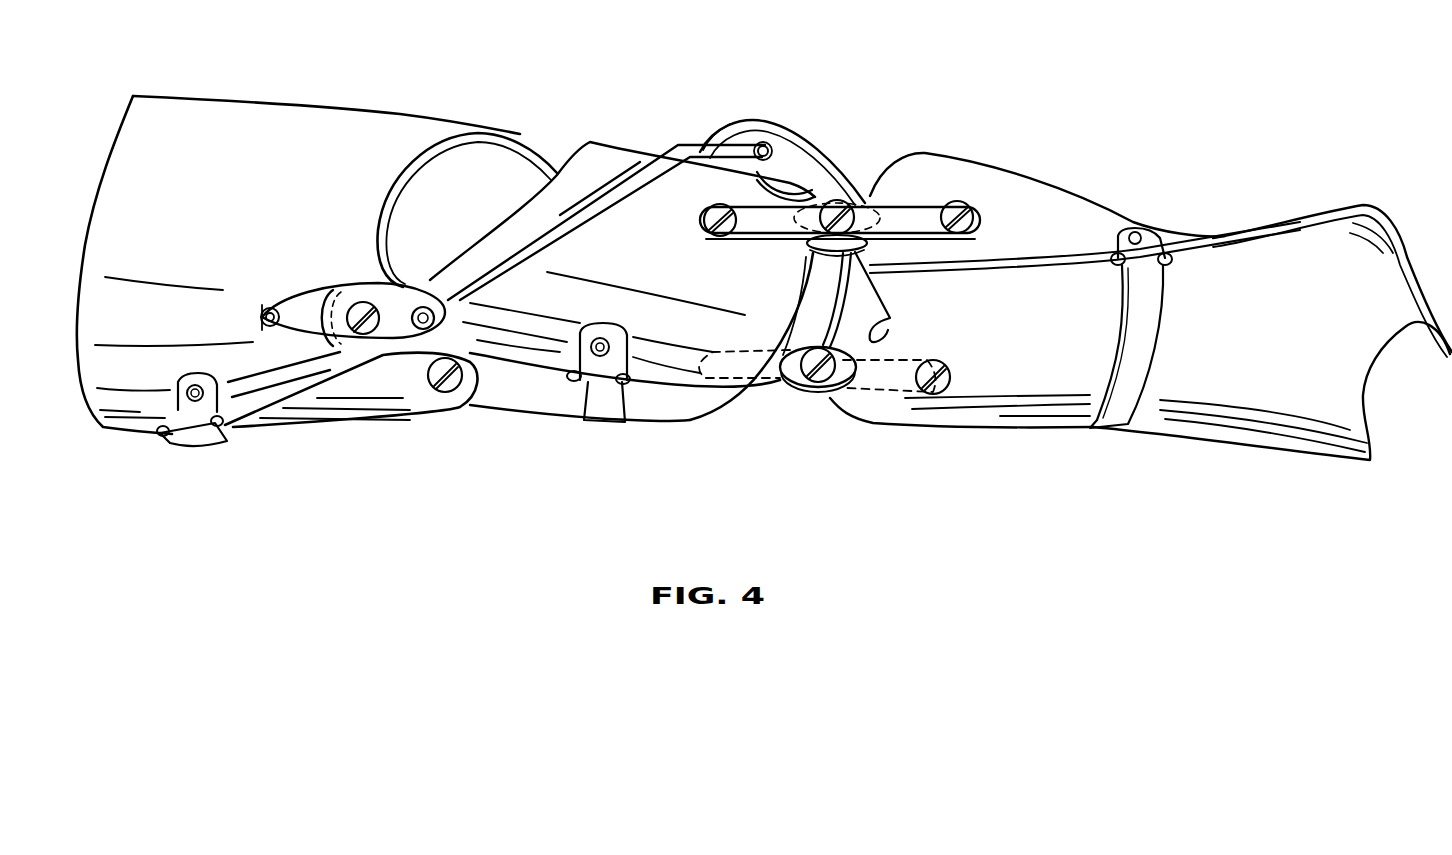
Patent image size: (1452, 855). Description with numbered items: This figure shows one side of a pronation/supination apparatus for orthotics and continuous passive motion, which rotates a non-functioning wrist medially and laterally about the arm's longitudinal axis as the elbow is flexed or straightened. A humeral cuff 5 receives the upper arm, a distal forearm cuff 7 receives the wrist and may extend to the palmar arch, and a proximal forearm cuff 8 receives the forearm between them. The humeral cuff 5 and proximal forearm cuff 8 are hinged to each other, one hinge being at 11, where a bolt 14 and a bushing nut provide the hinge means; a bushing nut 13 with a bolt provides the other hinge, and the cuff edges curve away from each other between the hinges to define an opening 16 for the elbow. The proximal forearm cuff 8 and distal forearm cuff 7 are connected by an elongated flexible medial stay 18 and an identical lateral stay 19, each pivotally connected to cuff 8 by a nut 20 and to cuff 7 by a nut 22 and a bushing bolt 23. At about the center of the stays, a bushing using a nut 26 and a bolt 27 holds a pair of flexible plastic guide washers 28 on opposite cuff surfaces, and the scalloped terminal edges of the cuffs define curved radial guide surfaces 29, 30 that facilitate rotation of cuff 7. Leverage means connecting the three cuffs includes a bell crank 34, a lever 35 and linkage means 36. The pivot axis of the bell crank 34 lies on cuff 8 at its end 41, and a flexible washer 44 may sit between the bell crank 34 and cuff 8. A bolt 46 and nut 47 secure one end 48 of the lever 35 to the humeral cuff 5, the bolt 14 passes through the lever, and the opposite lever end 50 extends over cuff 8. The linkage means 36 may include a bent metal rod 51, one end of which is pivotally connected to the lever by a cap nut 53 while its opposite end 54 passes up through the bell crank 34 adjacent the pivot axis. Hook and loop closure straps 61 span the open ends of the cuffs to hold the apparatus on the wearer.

The humeral cuff 5 is at (330, 125).
The distal forearm cuff 7 is at (1078, 213).
The proximal forearm cuff 8 is at (545, 420).
The hinge 11 is at (351, 284).
The bushing nut 13 is at (440, 390).
The bolt 14 is at (367, 340).
The opening 16 is at (499, 172).
The medial stay 18 is at (915, 215).
The lateral stay 19 is at (873, 352).
The nut 20 is at (706, 222).
The nut 22 is at (967, 207).
The bushing bolt 23 is at (952, 375).
The nut 26 is at (842, 212).
The bolt 27 is at (850, 365).
The guide washers 28 is at (858, 266).
The curved radial guide surface 29 is at (884, 325).
The curved radial guide surface 30 is at (803, 308).
The bell crank 34 is at (828, 160).
The lever 35 is at (305, 303).
The linkage means 36 is at (577, 220).
The end of bell crank 41 is at (712, 136).
The flexible washer 44 is at (790, 170).
The bolt 46 is at (270, 337).
The nut 47 is at (268, 306).
The end of lever 48 is at (258, 317).
The end of lever 50 is at (465, 358).
The rod 51 is at (510, 267).
The cap nut 53 is at (427, 300).
The end of rod 54 is at (764, 143).
The hook and loop closure strap 61 is at (1153, 330).